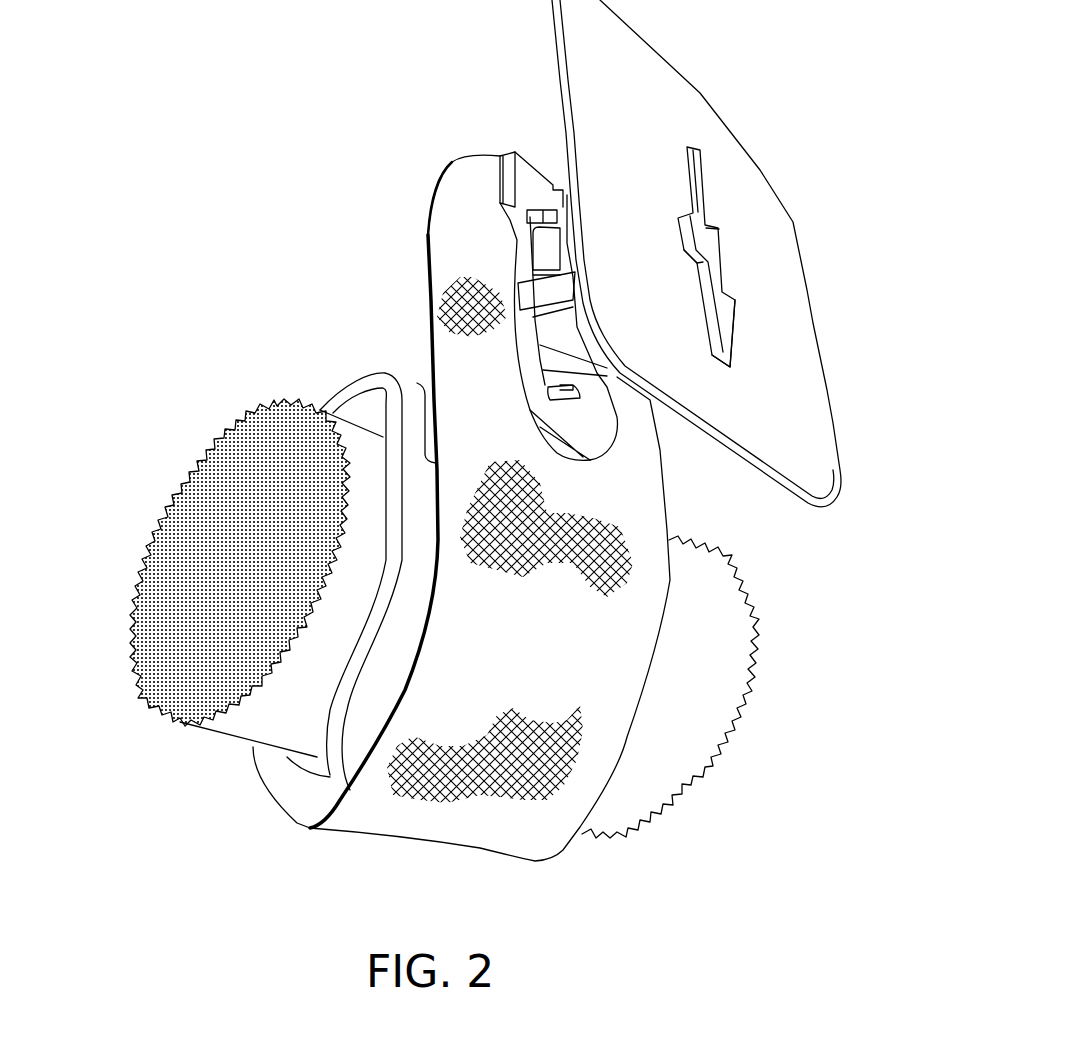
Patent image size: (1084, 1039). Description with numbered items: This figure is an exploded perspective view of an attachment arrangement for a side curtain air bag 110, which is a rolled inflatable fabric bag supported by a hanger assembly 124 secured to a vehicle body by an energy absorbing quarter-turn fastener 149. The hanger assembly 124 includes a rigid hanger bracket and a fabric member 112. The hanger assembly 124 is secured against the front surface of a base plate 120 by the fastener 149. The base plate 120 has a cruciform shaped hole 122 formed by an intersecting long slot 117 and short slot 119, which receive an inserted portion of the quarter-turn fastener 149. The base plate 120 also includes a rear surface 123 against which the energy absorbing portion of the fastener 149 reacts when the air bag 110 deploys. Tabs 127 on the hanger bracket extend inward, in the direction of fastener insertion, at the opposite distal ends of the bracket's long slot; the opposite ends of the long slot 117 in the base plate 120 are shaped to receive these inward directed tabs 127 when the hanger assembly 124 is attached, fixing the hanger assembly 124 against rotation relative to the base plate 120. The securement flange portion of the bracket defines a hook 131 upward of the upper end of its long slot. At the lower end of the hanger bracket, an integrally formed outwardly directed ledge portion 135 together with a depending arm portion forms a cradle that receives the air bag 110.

The curtain air bag 110 is at (225, 568).
The fabric member 112 is at (532, 293).
The long slot 117 is at (693, 173).
The short slot 119 is at (717, 273).
The base plate 120 is at (698, 93).
The cruciform shaped hole 122 is at (697, 237).
The rear surface 123 is at (770, 390).
The hanger assembly 124 is at (450, 143).
The tabs 127 is at (530, 212).
The hook 131 is at (528, 190).
The ledge portion 135 is at (343, 393).
The energy absorbing quarter-turn fastener 149 is at (458, 242).